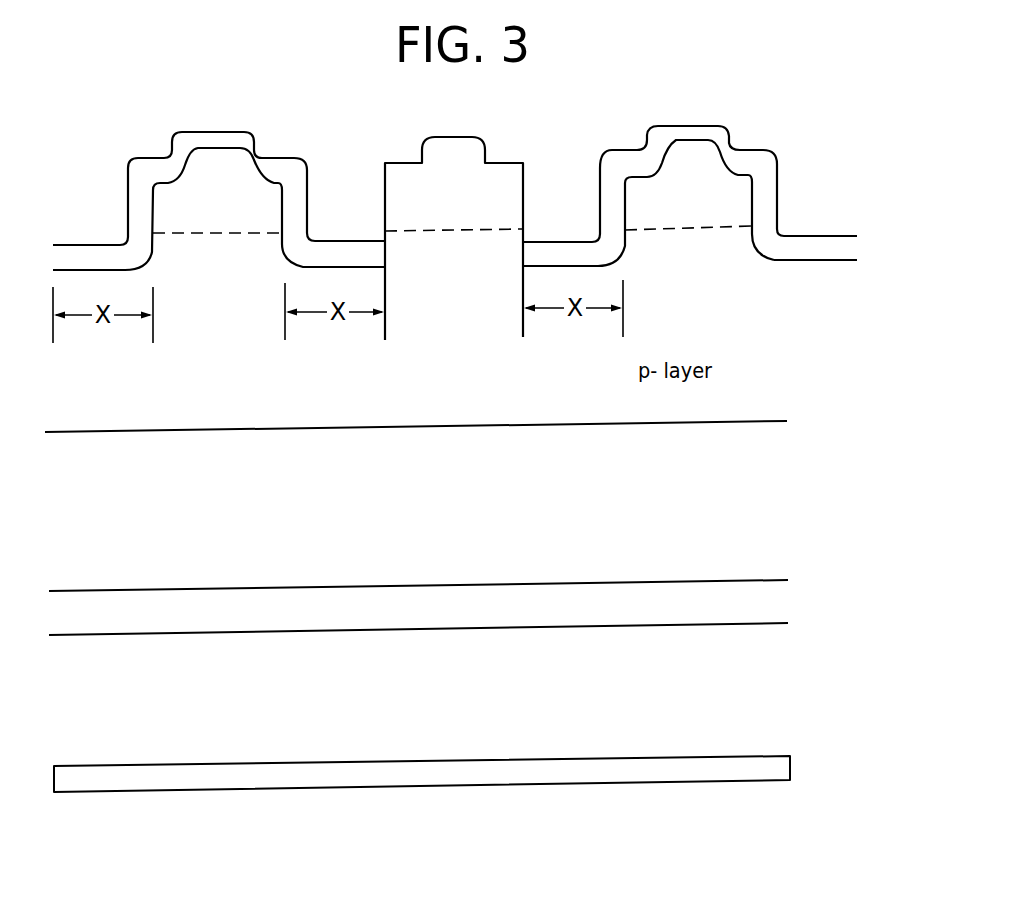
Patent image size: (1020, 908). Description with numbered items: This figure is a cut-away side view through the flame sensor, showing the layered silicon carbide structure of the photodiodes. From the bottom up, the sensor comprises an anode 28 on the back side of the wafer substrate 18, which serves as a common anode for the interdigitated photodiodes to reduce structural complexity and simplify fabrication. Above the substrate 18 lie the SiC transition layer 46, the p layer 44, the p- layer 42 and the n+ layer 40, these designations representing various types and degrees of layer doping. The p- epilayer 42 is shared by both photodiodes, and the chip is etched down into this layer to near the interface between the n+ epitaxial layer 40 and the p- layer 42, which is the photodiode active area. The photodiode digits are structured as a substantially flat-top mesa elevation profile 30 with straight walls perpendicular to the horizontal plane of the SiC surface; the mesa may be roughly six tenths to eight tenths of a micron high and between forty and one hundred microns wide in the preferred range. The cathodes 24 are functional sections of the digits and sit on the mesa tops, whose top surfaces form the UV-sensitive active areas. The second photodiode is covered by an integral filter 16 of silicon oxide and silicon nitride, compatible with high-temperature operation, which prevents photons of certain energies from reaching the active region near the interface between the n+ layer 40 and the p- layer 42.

The filter 16 is at (130, 170).
The cathode 24 is at (220, 157).
The mesa elevation profile 30 is at (302, 203).
The n+ epitaxial layer 40 is at (718, 178).
The p- layer 42 is at (847, 290).
The p layer 44 is at (720, 512).
The SiC transition layer 46 is at (842, 603).
The substrate 18 is at (792, 692).
The anode 28 is at (710, 783).